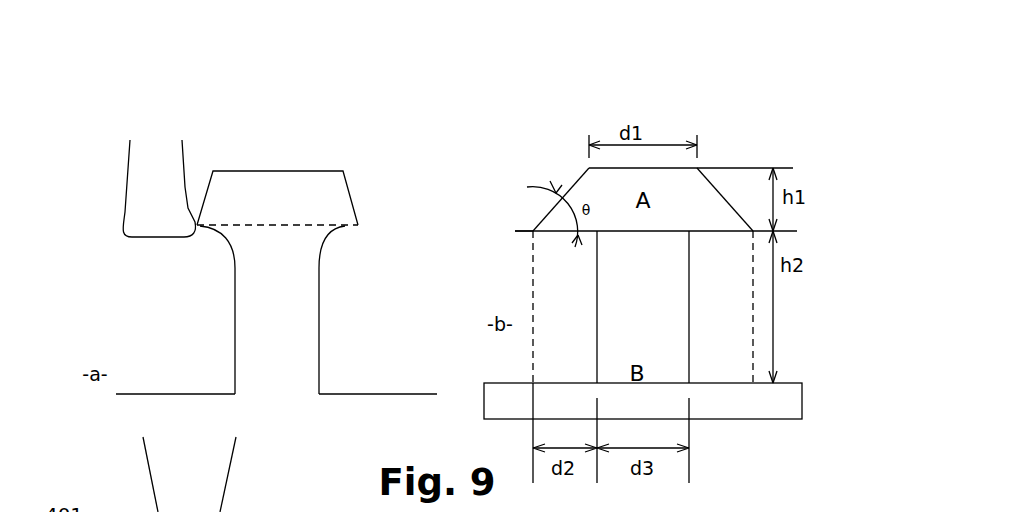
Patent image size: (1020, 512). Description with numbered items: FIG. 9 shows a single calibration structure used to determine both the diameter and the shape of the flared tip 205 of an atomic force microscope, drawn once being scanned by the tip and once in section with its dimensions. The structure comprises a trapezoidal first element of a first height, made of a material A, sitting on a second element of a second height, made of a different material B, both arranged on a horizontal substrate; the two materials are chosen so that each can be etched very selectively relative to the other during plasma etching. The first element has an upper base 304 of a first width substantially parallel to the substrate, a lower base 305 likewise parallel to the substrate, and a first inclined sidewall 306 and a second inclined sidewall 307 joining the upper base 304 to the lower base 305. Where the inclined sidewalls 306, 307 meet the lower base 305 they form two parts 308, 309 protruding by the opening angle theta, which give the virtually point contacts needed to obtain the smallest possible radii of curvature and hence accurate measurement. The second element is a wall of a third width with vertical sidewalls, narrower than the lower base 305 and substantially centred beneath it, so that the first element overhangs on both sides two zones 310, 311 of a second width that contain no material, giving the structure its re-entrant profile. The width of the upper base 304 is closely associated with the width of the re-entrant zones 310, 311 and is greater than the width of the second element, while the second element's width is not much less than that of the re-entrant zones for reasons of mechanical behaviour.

The flared tip 205 is at (146, 171).
The upper base 304 is at (667, 168).
The lower base 305 is at (715, 231).
The first inclined sidewall 306 is at (575, 183).
The second inclined sidewall 307 is at (733, 207).
The protruding part 308 is at (516, 231).
The protruding part 309 is at (753, 232).
The re-entrant zone 310 is at (555, 278).
The re-entrant zone 311 is at (727, 333).